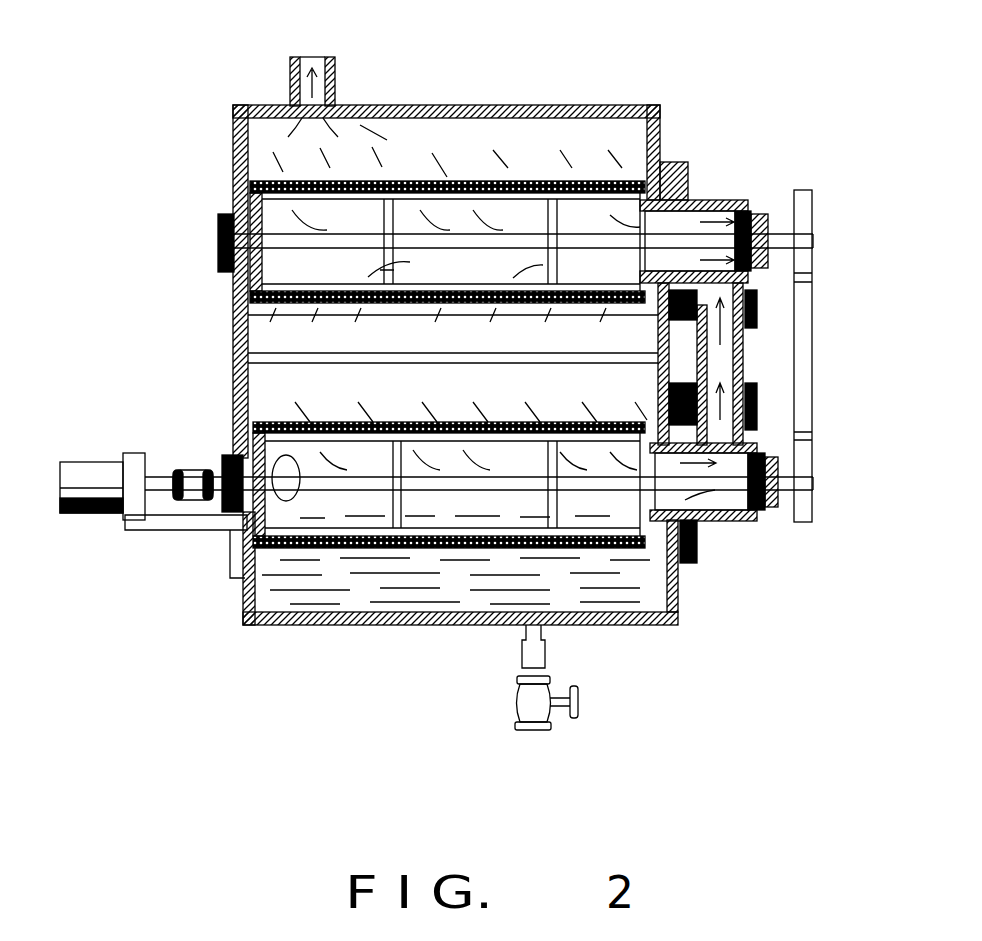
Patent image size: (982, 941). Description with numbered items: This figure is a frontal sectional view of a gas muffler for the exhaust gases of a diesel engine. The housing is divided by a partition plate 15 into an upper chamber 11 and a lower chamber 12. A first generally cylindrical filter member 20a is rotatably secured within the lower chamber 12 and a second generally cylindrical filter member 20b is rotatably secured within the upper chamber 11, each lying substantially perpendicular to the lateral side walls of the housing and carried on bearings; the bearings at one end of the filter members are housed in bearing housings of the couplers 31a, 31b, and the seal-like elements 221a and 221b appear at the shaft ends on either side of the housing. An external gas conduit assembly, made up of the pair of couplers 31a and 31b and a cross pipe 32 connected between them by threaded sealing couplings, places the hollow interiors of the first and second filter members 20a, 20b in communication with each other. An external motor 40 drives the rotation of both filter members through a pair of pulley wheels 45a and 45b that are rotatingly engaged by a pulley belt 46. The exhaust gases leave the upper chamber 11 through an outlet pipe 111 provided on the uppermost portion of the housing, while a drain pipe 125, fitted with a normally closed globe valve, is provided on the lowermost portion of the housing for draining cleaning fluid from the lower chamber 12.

The upper chamber 11 is at (562, 126).
The lower chamber 12 is at (250, 384).
The partition plate 15 is at (420, 365).
The first filter member 20a is at (350, 548).
The second filter member 20b is at (455, 180).
The coupler 31a is at (720, 524).
The coupler 31b is at (712, 198).
The cross pipe 32 is at (744, 360).
The external motor 40 is at (92, 468).
The pulley wheel 45a is at (818, 500).
The pulley wheel 45b is at (810, 200).
The pulley belt 46 is at (804, 326).
The outlet pipe 111 is at (332, 74).
The drain pipe 125 is at (516, 726).
The left shaft seal 221a is at (228, 276).
The right shaft seal 221b is at (745, 205).